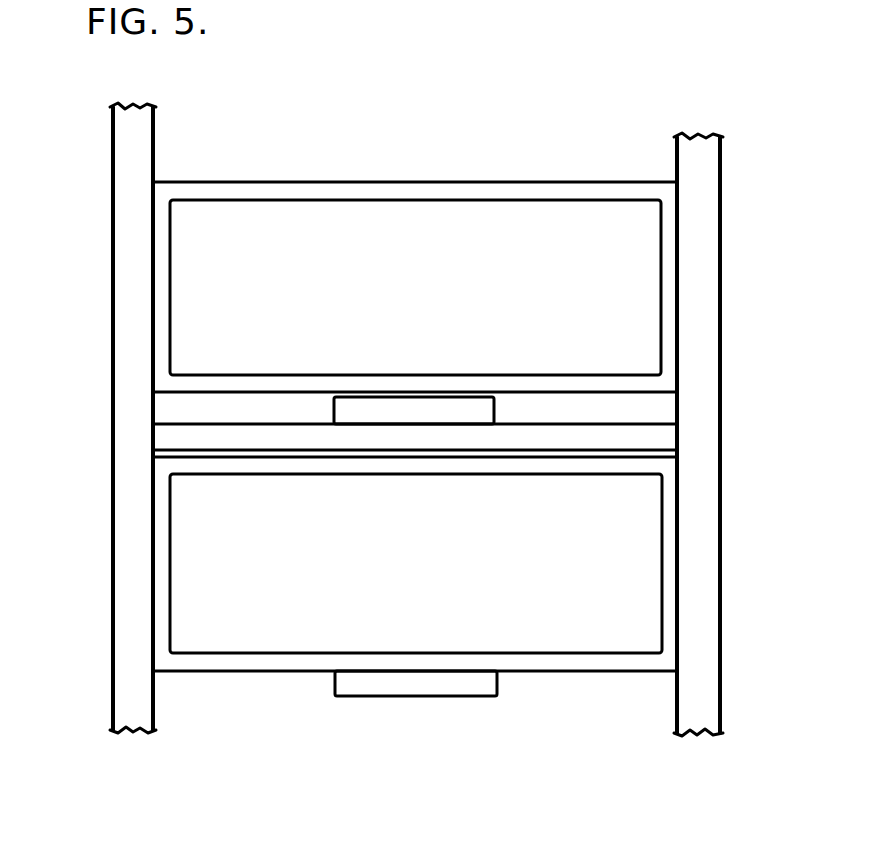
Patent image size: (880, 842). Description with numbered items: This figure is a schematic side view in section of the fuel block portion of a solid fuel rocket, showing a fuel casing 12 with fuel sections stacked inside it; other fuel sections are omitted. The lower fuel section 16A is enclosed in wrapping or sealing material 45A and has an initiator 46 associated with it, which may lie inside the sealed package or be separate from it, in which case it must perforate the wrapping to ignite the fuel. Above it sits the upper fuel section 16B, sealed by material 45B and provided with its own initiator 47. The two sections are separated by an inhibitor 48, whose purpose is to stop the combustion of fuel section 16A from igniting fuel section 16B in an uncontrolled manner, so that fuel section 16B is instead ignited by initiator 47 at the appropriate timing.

The fuel casing 12 is at (118, 243).
The fuel section 16A is at (638, 556).
The fuel section 16B is at (645, 256).
The wrapping/sealing material 45A is at (227, 661).
The sealing material 45B is at (280, 182).
The initiator 46 is at (448, 683).
The initiator 47 is at (494, 407).
The inhibitor 48 is at (670, 437).